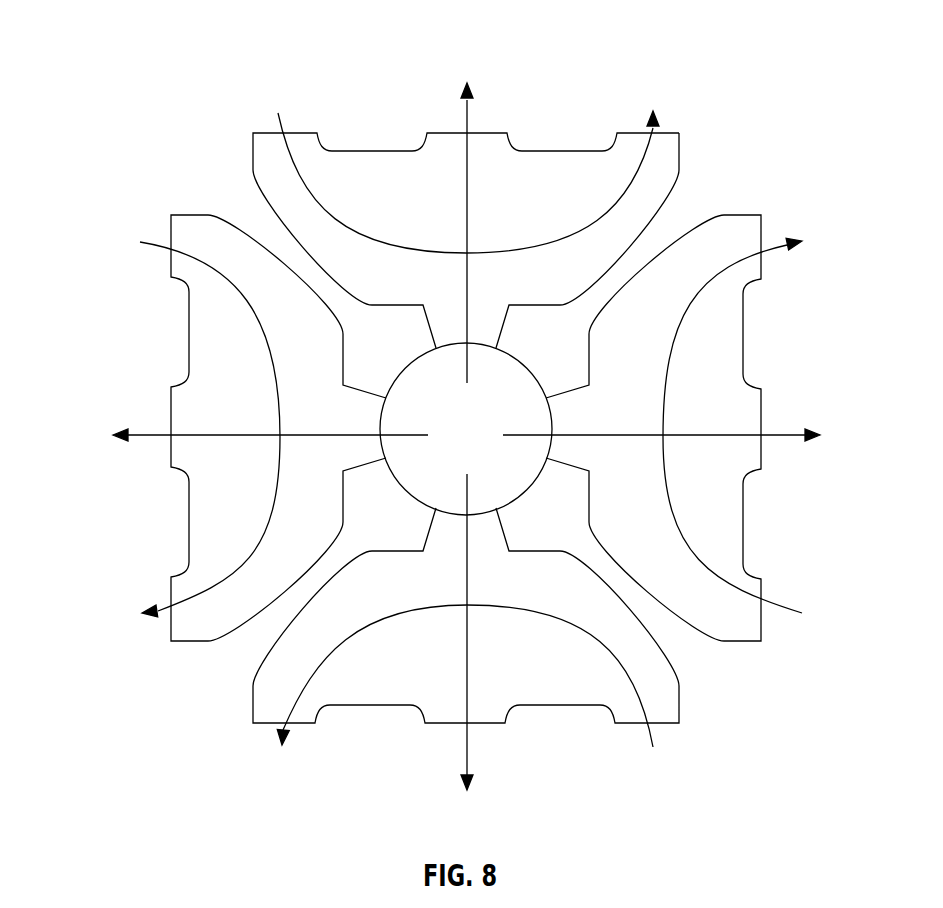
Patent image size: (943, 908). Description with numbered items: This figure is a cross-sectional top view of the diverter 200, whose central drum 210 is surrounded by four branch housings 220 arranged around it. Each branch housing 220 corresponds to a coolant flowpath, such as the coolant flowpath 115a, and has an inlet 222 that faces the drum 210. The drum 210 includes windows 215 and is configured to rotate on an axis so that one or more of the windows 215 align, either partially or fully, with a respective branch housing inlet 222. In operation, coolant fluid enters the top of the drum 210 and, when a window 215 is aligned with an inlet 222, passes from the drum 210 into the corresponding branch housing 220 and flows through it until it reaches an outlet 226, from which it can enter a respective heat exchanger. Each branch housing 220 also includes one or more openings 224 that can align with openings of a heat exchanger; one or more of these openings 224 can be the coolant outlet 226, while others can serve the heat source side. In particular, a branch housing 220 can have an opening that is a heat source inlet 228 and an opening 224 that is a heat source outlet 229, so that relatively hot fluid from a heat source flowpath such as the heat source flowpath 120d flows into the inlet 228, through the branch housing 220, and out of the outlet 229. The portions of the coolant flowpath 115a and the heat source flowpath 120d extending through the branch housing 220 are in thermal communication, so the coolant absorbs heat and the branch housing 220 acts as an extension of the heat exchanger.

The diverter 200 is at (97, 123).
The drum 210 is at (412, 362).
The window 215 is at (455, 513).
The branch housing 220 is at (733, 216).
The inlet 222 is at (552, 437).
The opening 224 is at (427, 723).
The outlet 226 is at (495, 723).
The heat source inlet 228 is at (301, 133).
The heat source outlet 229 is at (679, 133).
The coolant flowpath 115a is at (508, 148).
The heat source flowpath 120d is at (255, 545).